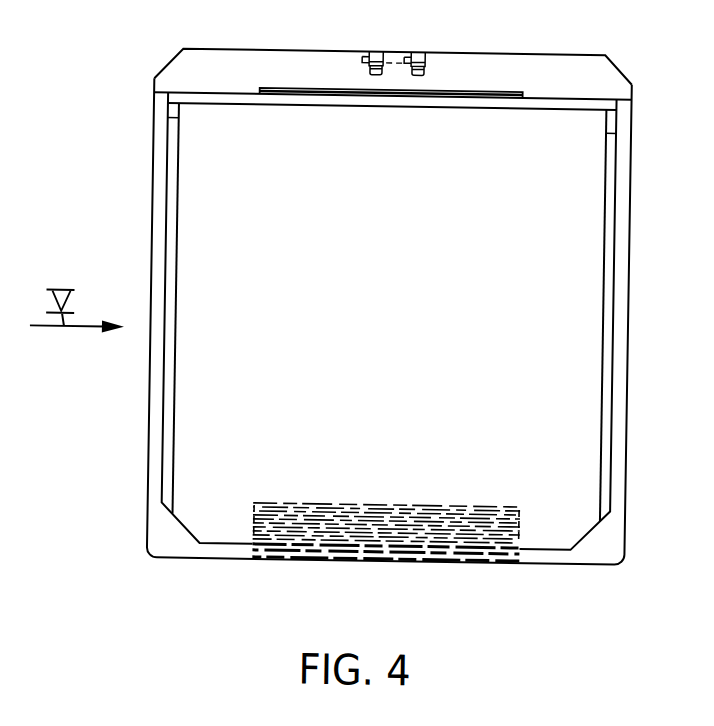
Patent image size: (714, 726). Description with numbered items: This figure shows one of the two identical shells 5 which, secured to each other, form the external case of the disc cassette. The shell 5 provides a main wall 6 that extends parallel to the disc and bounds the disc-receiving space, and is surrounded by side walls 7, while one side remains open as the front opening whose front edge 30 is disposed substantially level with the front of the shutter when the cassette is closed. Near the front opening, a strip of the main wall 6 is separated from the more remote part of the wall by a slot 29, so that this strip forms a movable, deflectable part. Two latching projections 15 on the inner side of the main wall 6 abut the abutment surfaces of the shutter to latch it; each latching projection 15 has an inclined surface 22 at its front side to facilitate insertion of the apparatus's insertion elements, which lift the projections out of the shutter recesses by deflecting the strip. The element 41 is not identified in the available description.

The shell 5 is at (150, 439).
The main wall 6 is at (203, 368).
The side wall 7 is at (161, 249).
The latching projection 15 is at (371, 77).
The inclined surface 22 is at (369, 53).
The slot 29 is at (283, 91).
The front edge 30 is at (546, 53).
The cover panel 41 is at (478, 74).